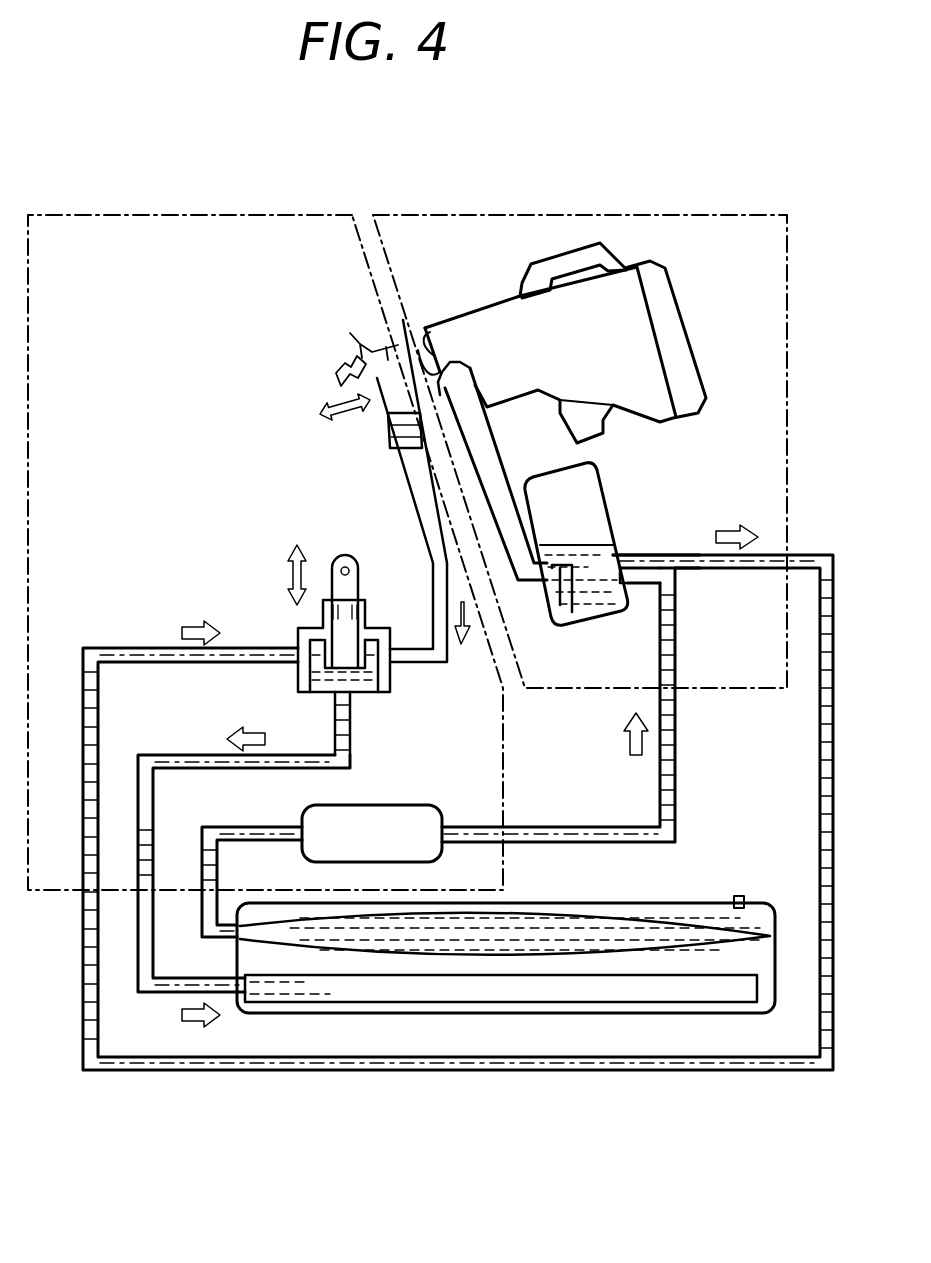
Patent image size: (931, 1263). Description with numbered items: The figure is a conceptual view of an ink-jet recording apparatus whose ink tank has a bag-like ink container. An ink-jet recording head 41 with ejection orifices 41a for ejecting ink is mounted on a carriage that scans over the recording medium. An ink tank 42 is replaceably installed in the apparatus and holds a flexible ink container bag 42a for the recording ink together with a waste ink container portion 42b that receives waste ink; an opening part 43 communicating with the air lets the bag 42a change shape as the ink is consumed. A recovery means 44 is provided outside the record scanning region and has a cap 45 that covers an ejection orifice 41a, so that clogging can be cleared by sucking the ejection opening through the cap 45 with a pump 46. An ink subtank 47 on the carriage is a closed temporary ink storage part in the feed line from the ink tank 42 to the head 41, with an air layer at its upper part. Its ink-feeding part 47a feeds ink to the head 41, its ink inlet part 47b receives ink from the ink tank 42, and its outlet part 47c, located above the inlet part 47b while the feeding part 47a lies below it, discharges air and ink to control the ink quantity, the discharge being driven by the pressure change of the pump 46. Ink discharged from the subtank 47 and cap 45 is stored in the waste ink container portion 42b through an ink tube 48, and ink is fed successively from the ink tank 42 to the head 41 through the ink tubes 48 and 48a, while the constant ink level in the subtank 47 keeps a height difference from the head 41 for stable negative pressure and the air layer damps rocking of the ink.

The ink-jet recording head 41 is at (625, 322).
The ejection orifices 41a is at (416, 345).
The ink tank 42 is at (766, 953).
The flexible ink container bag 42a is at (457, 938).
The waste ink container portion 42b is at (667, 993).
The opening part 43 is at (739, 897).
The recovery means 44 is at (240, 228).
The cap 45 is at (375, 352).
The pump 46 is at (345, 640).
The ink subtank 47 is at (595, 494).
The ink-feeding part 47a is at (565, 622).
The ink inlet part 47b is at (643, 597).
The outlet part 47c is at (682, 558).
The ink tube 48 is at (830, 771).
The ink tube 48a is at (486, 428).